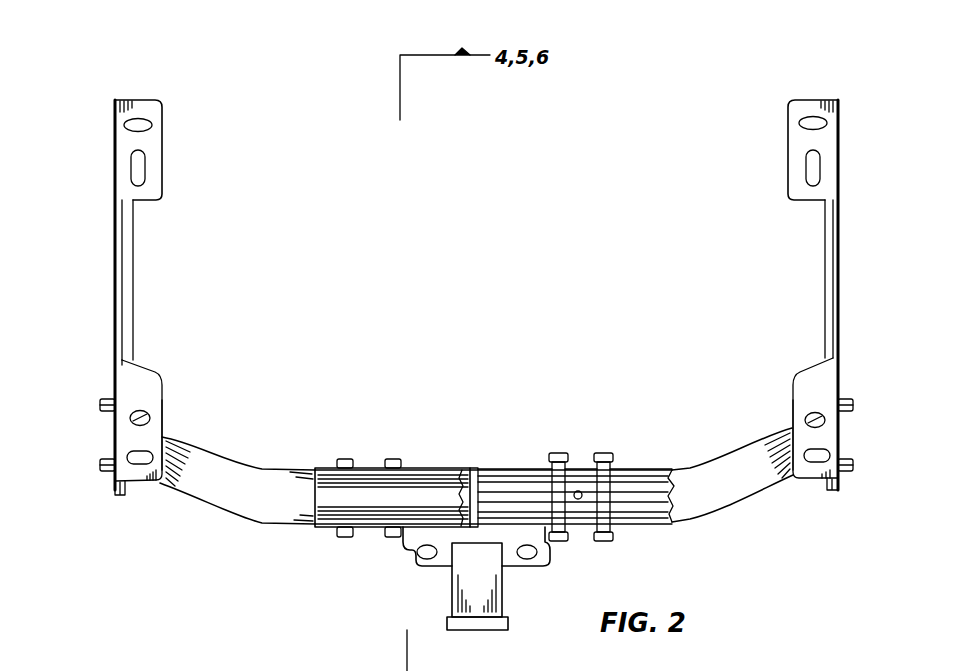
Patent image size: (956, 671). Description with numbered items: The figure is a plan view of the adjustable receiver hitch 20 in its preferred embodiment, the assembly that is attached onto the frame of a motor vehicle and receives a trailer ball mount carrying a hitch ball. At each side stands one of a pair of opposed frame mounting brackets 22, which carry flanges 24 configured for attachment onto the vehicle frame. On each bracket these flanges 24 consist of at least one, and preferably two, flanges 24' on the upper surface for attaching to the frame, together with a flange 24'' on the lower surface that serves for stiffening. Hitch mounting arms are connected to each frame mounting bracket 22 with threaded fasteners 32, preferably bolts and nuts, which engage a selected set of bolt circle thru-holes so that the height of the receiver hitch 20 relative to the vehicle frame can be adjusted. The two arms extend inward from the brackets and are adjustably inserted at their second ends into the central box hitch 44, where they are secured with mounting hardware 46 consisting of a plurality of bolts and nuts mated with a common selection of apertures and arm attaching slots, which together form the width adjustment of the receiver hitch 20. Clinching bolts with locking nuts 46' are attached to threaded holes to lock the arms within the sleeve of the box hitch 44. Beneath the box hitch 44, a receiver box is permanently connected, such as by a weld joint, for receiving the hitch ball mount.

The adjustable receiver hitch 20 is at (470, 432).
The frame mounting bracket 22 is at (120, 236).
The flange 24 is at (476, 336).
The upper surface flange 24' is at (457, 415).
The lower surface flange 24'' is at (478, 280).
The threaded fastener 32 is at (106, 474).
The box hitch 44 is at (542, 580).
The mounting hardware 46 is at (326, 543).
The clinching bolt with locking nut 46' is at (590, 446).